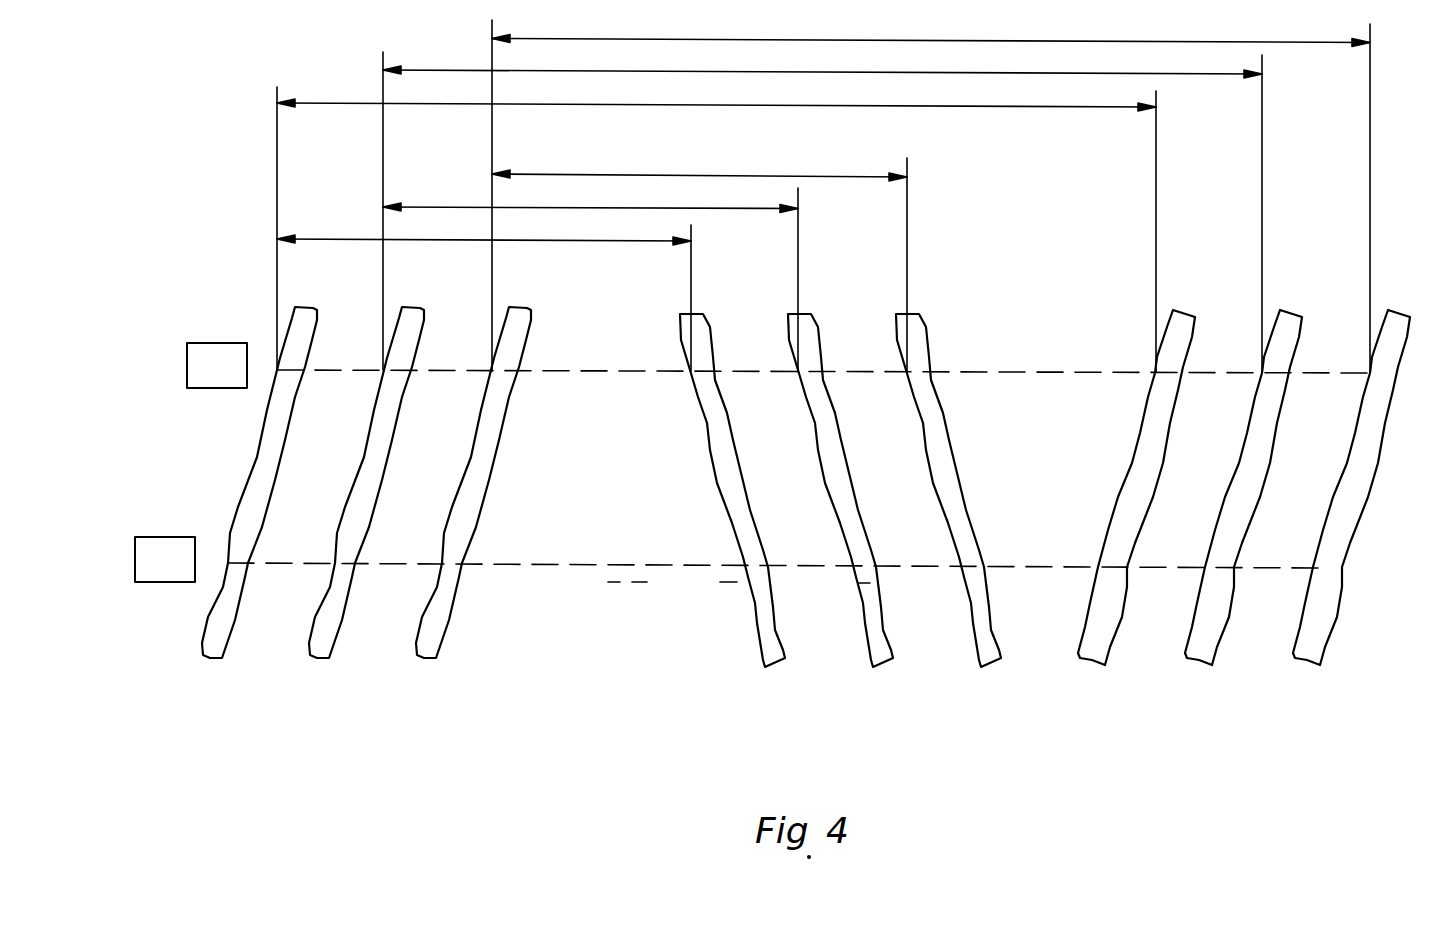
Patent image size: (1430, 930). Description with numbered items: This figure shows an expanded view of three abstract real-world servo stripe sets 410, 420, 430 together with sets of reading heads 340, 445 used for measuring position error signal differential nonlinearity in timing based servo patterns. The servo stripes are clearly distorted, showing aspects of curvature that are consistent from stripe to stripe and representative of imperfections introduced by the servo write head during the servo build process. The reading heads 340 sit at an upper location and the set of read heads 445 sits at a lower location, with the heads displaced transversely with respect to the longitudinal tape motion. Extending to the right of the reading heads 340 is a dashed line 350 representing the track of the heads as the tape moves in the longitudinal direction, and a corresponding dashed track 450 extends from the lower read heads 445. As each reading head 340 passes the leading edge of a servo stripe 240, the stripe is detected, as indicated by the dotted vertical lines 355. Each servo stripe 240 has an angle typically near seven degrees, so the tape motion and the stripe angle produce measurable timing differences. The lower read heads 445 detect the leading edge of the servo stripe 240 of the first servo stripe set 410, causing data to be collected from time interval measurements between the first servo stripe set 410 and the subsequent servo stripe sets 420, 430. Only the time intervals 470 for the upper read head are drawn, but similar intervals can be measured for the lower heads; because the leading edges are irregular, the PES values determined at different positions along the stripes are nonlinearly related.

The servo stripe 240 is at (487, 504).
The reading heads 340 is at (187, 361).
The dashed line 350 is at (622, 373).
The dotted vertical lines 355 is at (277, 172).
The first servo stripe set 410 is at (375, 521).
The second servo stripe set 420 is at (1008, 688).
The third servo stripe set 430 is at (1322, 688).
The set of read heads 445 is at (135, 556).
The track of the lower read heads 450 is at (568, 567).
The time intervals 470 is at (927, 32).